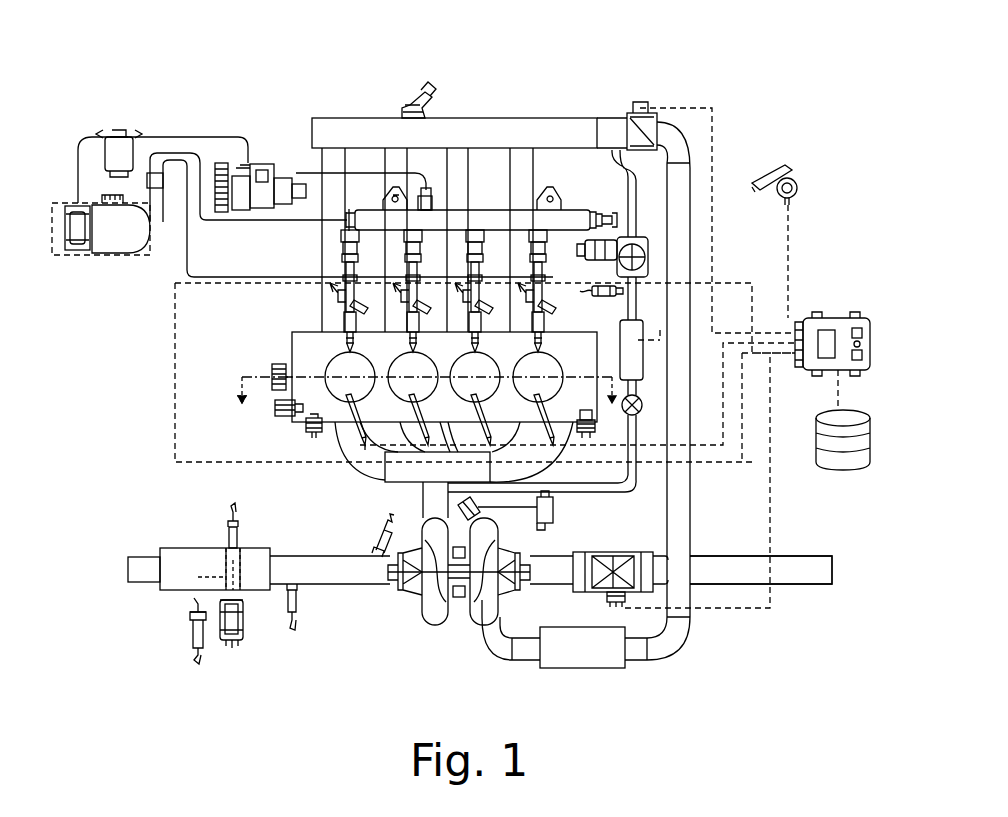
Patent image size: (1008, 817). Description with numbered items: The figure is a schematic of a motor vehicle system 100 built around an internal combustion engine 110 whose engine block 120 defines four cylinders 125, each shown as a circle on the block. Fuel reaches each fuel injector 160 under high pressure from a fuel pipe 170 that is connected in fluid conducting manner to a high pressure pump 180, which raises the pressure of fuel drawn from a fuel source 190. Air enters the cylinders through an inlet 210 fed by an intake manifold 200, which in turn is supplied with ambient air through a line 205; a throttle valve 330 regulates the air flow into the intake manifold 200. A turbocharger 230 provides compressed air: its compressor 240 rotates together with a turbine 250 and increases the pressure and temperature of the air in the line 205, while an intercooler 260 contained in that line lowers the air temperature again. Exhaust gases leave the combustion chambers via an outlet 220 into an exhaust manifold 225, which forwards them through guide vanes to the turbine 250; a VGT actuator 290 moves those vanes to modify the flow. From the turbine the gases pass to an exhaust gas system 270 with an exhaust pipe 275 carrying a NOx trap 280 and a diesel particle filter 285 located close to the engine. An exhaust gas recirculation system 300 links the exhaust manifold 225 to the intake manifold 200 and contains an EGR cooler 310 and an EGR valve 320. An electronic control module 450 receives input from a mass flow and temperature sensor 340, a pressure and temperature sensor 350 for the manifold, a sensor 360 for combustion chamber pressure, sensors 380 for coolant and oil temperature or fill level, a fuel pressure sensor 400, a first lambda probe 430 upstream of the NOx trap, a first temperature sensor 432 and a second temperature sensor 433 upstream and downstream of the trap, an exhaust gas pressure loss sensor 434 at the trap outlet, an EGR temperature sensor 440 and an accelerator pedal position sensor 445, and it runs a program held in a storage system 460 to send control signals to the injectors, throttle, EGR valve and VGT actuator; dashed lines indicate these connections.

The motor vehicle system 100 is at (213, 98).
The internal combustion engine 110 is at (558, 110).
The engine block 120 is at (330, 332).
The cylinder 125 is at (553, 352).
The fuel injector 160 is at (323, 303).
The fuel pipe 170 is at (355, 222).
The high pressure pump 180 is at (268, 160).
The fuel source 190 is at (130, 245).
The intake manifold 200 is at (448, 130).
The line 205 is at (795, 573).
The inlet 210 is at (293, 350).
The outlet 220 is at (345, 424).
The exhaust manifold 225 is at (400, 472).
The turbocharger 230 is at (428, 637).
The compressor 240 is at (488, 607).
The turbine 250 is at (428, 604).
The intercooler 260 is at (577, 657).
The exhaust gas system 270 is at (160, 545).
The exhaust pipe 275 is at (135, 585).
The NOx trap 280 is at (254, 585).
The diesel particle filter 285 is at (180, 585).
The VGT actuator 290 is at (478, 508).
The exhaust gas recirculation system 300 is at (592, 493).
The EGR cooler 310 is at (645, 365).
The EGR valve 320 is at (648, 245).
The throttle valve 330 is at (640, 105).
The mass flow and temperature sensor 340 is at (615, 596).
The pressure and temperature sensor 350 is at (412, 98).
The combustion chamber pressure sensor 360 is at (360, 423).
The coolant and oil temperature sensors 380 is at (305, 432).
The fuel pressure sensor 400 is at (627, 170).
The first lambda probe 430 is at (245, 663).
The first temperature sensor 432 is at (228, 505).
The second temperature sensor 433 is at (190, 637).
The exhaust gas pressure loss sensor 434 is at (228, 641).
The EGR temperature sensor 440 is at (642, 280).
The accelerator pedal position sensor 445 is at (795, 180).
The electronic control module 450 is at (840, 318).
The storage system 460 is at (843, 470).